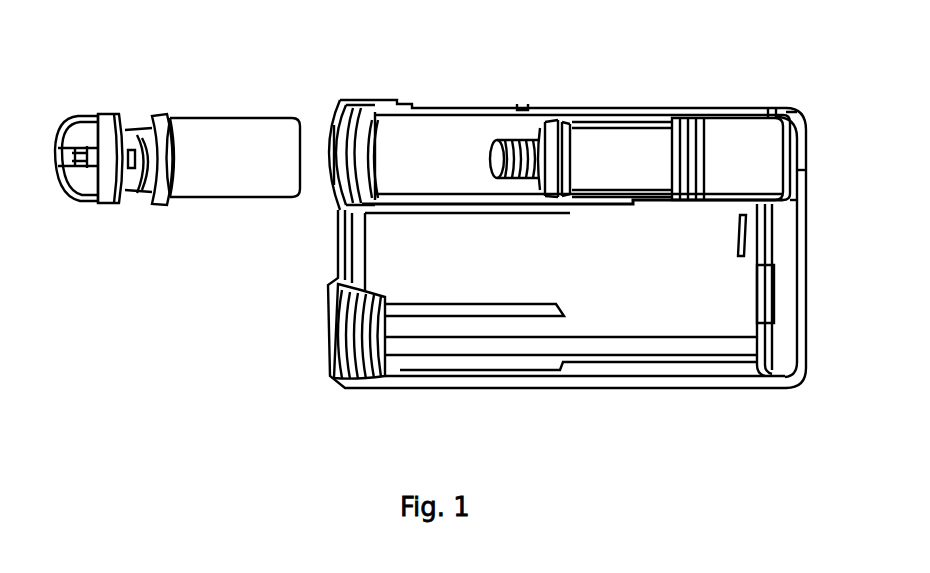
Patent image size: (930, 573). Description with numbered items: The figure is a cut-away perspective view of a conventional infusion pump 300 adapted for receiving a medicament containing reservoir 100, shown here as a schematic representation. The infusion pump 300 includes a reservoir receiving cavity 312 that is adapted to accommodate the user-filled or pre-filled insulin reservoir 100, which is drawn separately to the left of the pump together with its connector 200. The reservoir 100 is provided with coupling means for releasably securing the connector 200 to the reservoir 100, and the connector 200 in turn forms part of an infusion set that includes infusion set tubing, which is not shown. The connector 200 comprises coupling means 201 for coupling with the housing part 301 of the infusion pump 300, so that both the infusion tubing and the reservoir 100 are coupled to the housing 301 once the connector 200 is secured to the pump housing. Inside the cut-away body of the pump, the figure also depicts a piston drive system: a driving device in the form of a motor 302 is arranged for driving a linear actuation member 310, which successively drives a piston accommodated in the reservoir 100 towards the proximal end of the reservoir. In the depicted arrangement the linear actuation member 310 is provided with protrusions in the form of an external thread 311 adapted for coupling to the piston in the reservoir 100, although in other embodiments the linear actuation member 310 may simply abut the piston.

The reservoir 100 is at (222, 118).
The connector 200 is at (136, 124).
The coupling means 201 is at (144, 197).
The infusion pump 300 is at (544, 200).
The housing part 301 is at (334, 250).
The motor 302 is at (756, 130).
The linear actuation member 310 is at (640, 128).
The external thread 311 is at (522, 138).
The reservoir receiving cavity 312 is at (396, 122).